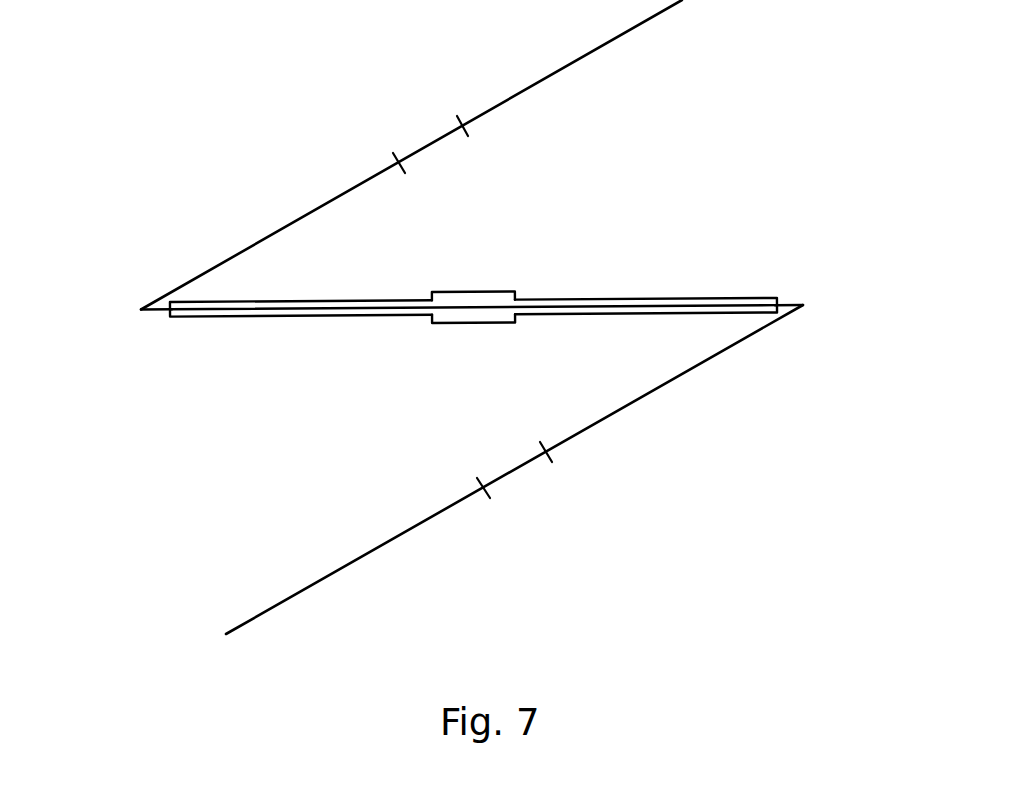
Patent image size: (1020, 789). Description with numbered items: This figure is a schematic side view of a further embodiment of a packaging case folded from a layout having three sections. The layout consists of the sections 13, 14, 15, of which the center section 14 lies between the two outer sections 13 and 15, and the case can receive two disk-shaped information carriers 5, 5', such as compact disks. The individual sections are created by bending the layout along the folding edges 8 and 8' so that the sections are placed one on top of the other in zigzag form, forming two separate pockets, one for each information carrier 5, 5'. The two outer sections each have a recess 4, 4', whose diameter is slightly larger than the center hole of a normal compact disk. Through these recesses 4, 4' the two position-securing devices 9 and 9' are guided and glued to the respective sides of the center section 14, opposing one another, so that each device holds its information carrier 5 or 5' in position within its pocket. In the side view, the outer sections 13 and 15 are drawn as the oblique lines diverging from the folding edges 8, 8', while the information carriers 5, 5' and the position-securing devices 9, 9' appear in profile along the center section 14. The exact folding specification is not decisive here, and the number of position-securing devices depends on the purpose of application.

The recess 4 is at (430, 93).
The recess 4' is at (546, 515).
The disk-shaped information carrier 5 is at (645, 254).
The disk-shaped information carrier 5' is at (646, 363).
The folding edge 8 is at (111, 267).
The folding edge 8' is at (824, 361).
The position-securing device 9 is at (492, 238).
The position-securing device 9' is at (449, 374).
The section 13 is at (263, 237).
The center section 14 is at (293, 313).
The section 15 is at (385, 545).